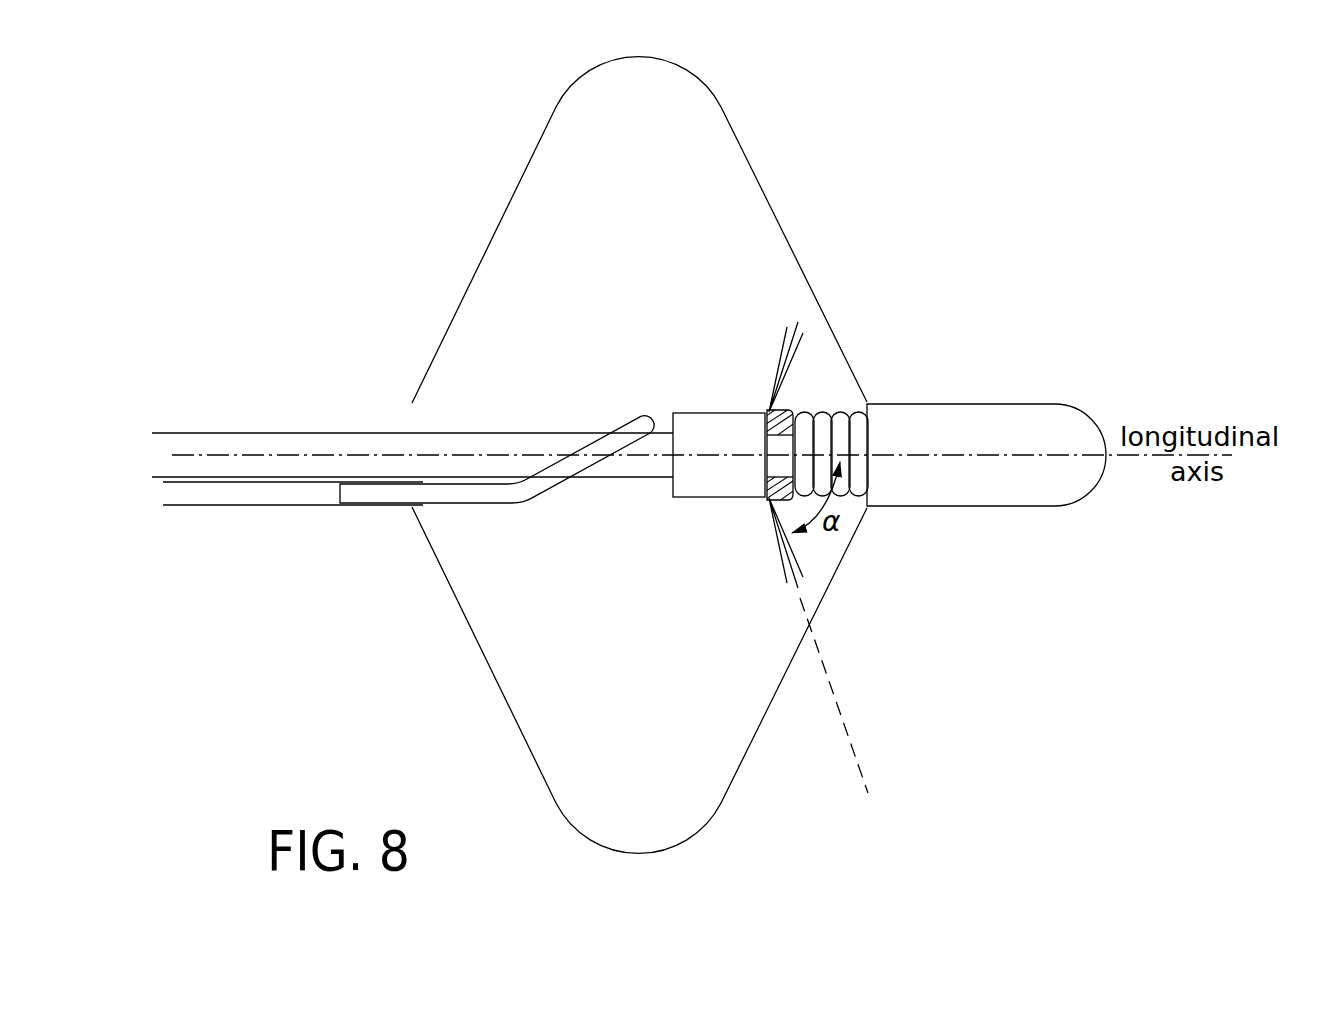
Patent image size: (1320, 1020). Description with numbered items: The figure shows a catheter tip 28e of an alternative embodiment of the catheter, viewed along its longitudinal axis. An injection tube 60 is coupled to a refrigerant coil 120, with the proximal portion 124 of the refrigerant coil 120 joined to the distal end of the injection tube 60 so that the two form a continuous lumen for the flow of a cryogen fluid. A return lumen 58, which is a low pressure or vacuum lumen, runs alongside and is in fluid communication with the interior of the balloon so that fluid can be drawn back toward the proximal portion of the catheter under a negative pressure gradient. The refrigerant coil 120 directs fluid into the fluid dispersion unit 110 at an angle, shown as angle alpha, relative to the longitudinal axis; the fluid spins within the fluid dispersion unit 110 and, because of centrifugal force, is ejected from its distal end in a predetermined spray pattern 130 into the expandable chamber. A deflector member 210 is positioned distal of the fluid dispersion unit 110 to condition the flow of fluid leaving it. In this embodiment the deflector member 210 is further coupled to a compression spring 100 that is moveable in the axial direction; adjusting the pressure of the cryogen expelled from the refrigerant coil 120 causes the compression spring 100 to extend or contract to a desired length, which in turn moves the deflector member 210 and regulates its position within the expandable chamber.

The catheter tip 28e is at (445, 122).
The return lumen 58 is at (185, 440).
The injection tube 60 is at (233, 511).
The proximal portion 124 is at (385, 503).
The refrigerant coil 120 is at (570, 453).
The fluid dispersion unit 110 is at (700, 512).
The deflector member 210 is at (793, 408).
The compression spring 100 is at (838, 427).
The spray pattern 130 is at (800, 352).